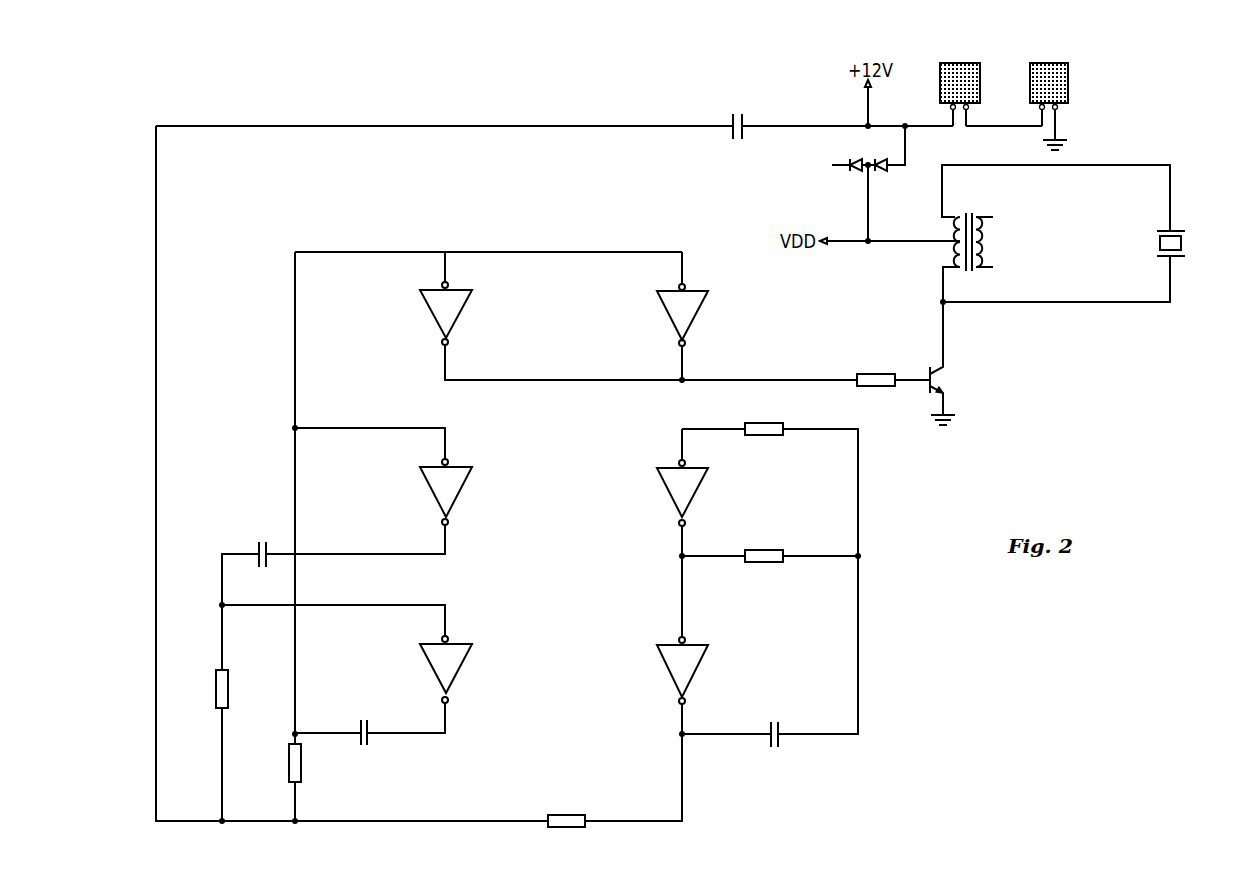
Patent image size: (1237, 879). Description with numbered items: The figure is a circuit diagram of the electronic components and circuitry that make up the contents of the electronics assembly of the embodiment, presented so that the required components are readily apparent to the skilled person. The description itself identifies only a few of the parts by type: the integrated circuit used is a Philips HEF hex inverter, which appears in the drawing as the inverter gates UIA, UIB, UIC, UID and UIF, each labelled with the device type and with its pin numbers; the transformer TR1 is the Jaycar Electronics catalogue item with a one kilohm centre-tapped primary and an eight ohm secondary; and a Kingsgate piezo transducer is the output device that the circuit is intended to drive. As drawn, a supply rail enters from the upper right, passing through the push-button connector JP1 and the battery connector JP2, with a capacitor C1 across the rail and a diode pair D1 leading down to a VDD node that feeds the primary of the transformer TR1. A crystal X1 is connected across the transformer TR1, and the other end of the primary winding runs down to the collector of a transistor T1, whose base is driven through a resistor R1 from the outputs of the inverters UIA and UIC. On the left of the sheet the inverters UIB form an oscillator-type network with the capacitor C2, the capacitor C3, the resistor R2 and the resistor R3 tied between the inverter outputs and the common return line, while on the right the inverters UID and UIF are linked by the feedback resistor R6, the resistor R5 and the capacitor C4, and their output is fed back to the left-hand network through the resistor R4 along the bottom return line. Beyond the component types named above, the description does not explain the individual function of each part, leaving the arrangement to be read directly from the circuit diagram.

The capacitor 10uF C1 is at (752, 146).
The dual diode DDP D1 is at (866, 148).
The push button connector JP1 is at (962, 66).
The battery connector JP2 is at (1072, 66).
The transformer TR1 is at (1011, 242).
The crystal XTAL X1 is at (1196, 251).
The NPN transistor T1 is at (926, 358).
The resistor 4k7 R1 is at (874, 379).
The inverter 4069 UIA is at (466, 318).
The inverter 4069 UIB is at (467, 584).
The inverter 4069 UIC is at (703, 313).
The inverter 4069 UID is at (704, 490).
The inverter 4069 UIF is at (704, 669).
The resistor 3.9M R6 is at (765, 432).
The resistor 360k R5 is at (765, 558).
The capacitor 220p C4 is at (787, 737).
The resistor 8k2 R4 is at (566, 823).
The capacitor 200p C2 is at (265, 557).
The capacitor 500p C3 is at (376, 735).
The resistor 420k R2 is at (248, 690).
The resistor 420k R3 is at (318, 766).